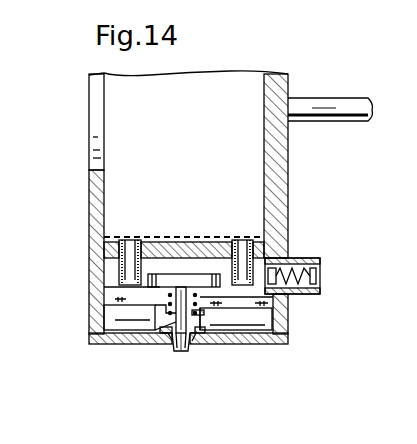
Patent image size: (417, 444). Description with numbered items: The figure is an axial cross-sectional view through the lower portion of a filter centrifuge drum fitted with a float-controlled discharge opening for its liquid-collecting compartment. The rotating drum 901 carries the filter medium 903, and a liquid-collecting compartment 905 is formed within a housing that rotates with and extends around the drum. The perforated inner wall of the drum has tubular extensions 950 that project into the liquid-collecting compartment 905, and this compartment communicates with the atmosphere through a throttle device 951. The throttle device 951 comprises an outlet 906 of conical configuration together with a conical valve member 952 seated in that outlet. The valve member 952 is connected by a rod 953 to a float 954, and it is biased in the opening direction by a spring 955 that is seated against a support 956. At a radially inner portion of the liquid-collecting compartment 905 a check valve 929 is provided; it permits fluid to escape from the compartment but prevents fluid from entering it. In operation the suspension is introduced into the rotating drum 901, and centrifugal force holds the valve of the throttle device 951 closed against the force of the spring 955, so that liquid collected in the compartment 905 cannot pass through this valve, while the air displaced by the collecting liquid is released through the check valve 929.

The rotating drum 901 is at (290, 143).
The filter medium 903 is at (130, 237).
The liquid-collecting compartment 905 is at (112, 287).
The outlet 906 is at (175, 349).
The check valve 929 is at (326, 288).
The tubular extensions 950 is at (118, 252).
The throttle device 951 is at (167, 346).
The conical valve member 952 is at (187, 351).
The rod 953 is at (190, 347).
The float 954 is at (193, 278).
The spring 955 is at (210, 310).
The support 956 is at (92, 333).